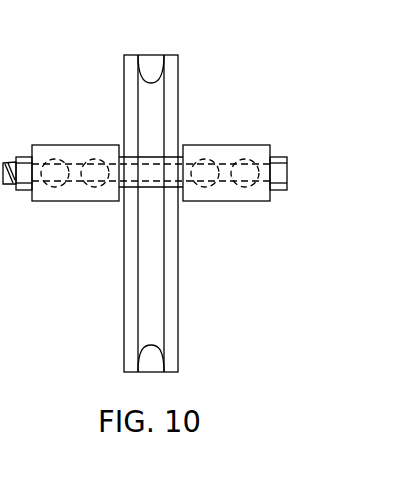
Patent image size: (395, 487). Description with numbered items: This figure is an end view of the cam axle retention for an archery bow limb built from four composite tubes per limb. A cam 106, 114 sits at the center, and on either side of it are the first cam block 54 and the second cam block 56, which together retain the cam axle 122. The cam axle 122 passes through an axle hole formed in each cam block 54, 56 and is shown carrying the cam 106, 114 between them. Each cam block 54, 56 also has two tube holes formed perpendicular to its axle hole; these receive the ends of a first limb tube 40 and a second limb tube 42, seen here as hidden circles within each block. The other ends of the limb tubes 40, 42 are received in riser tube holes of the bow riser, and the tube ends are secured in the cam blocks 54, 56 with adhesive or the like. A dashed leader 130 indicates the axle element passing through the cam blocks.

The first limb tube 40 is at (222, 183).
The second limb tube 42 is at (113, 162).
The first cam block 54 is at (230, 165).
The second cam block 56 is at (75, 177).
The cam 106 is at (228, 201).
The cam 114 is at (178, 320).
The cam axle 122 is at (287, 176).
The bolt 130 is at (192, 185).